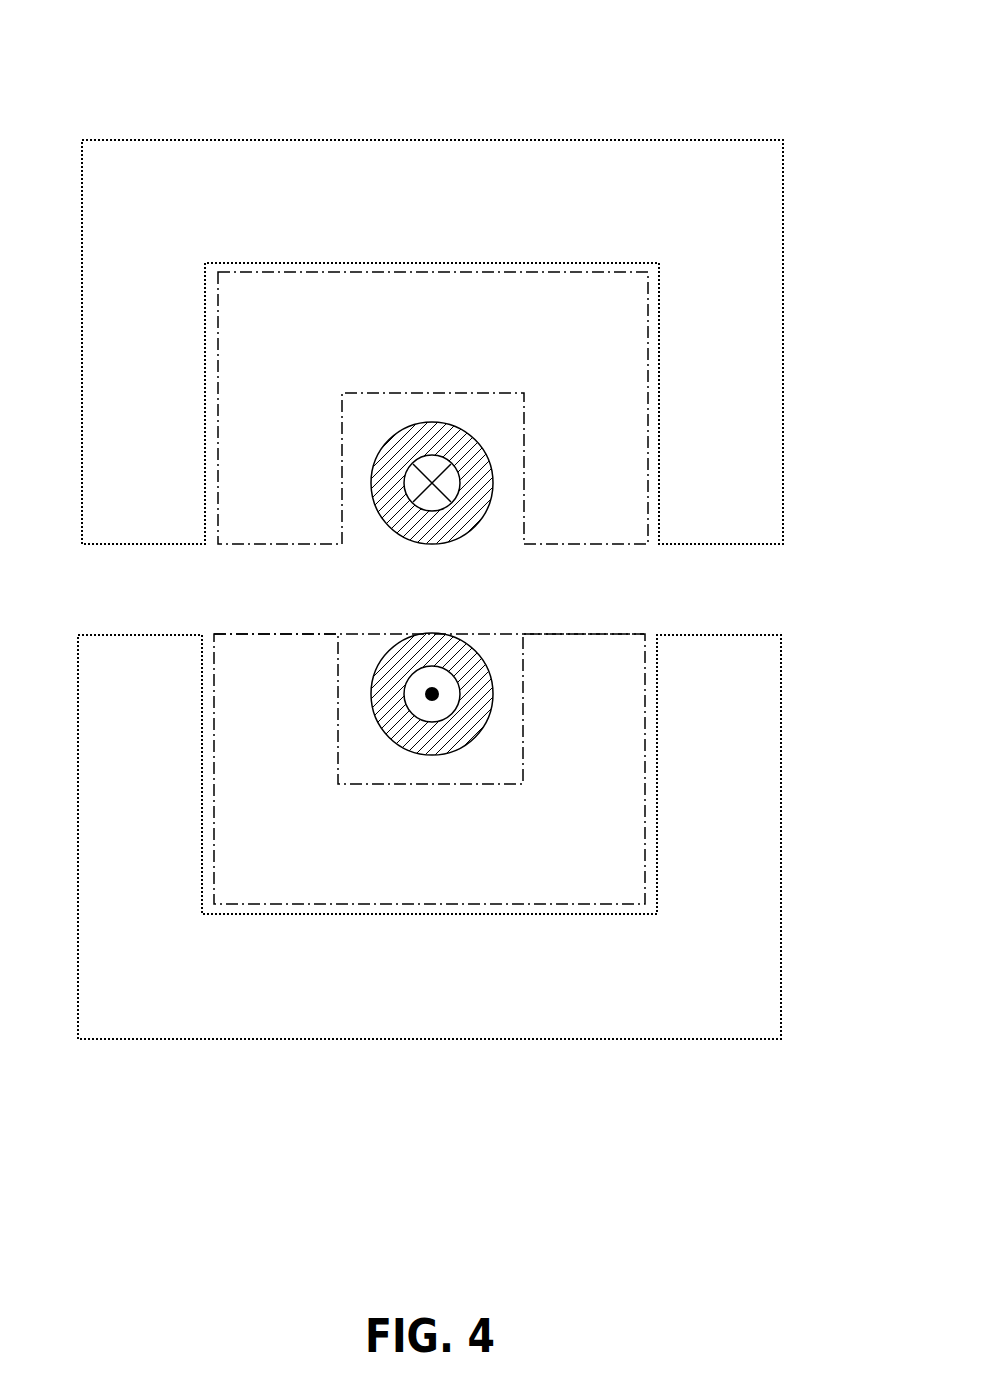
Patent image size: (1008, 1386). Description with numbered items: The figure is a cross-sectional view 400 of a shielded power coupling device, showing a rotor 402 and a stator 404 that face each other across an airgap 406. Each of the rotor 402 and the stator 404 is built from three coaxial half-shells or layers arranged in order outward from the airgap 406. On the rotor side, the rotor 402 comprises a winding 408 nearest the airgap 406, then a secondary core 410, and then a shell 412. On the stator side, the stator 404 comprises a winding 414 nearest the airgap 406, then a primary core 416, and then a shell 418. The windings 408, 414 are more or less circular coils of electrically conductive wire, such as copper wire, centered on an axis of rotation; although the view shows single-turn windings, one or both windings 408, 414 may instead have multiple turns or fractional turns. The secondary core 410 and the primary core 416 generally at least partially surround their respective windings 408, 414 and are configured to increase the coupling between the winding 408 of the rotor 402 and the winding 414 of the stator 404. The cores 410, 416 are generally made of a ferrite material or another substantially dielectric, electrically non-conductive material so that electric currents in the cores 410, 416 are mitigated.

The cross-sectional view 400 is at (115, 44).
The rotor 402 is at (817, 697).
The stator 404 is at (825, 150).
The airgap 406 is at (598, 593).
The winding 408 is at (405, 635).
The secondary core 410 is at (237, 633).
The shell 412 is at (113, 634).
The winding 414 is at (455, 538).
The primary core 416 is at (285, 545).
The shell 418 is at (142, 545).